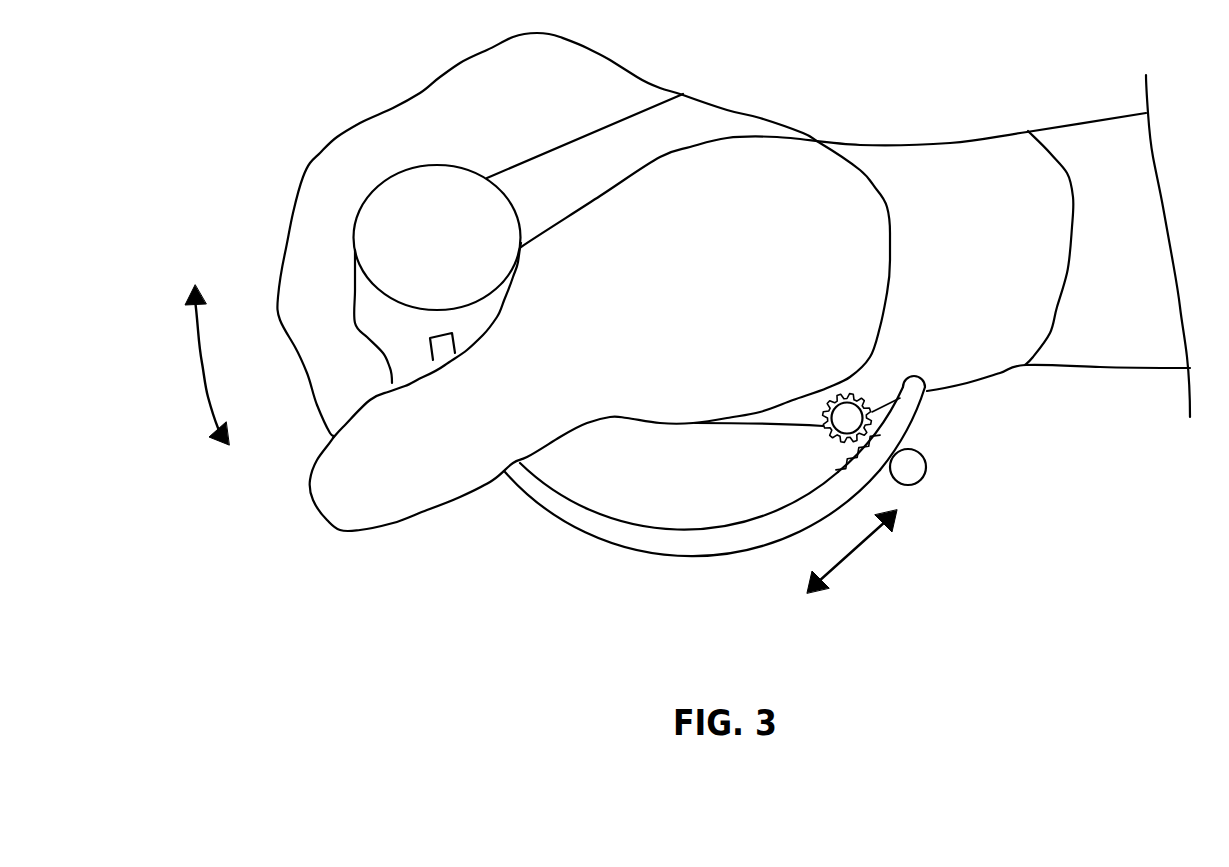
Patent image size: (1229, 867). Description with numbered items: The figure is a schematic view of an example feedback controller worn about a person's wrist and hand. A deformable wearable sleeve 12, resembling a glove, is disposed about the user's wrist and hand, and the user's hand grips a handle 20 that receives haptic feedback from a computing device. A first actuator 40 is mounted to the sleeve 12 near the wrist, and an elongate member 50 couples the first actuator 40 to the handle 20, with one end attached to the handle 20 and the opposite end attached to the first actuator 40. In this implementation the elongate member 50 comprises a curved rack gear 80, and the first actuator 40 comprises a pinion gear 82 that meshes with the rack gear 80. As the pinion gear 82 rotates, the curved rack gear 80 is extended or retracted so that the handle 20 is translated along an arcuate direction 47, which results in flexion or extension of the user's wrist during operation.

The sleeve 12 is at (953, 153).
The handle 20 is at (373, 199).
The first actuator 40 is at (933, 429).
The arcuate direction 47 is at (200, 363).
The elongate member 50 is at (600, 528).
The curved rack gear 80 is at (840, 465).
The pinion gear 82 is at (827, 425).